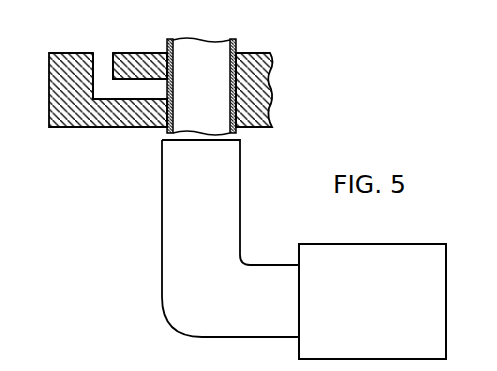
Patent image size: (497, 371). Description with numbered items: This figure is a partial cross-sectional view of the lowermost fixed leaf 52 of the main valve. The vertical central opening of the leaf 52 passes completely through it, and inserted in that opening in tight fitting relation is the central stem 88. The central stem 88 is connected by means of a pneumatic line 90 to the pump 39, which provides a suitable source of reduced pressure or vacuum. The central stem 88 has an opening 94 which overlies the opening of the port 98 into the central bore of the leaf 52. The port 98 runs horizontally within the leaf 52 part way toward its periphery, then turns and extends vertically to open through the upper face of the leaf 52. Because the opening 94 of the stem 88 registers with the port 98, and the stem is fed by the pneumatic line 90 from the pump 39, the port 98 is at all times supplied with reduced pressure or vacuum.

The leaf 52 is at (60, 87).
The central stem 88 is at (237, 42).
The opening 94 is at (171, 90).
The port 98 is at (102, 58).
The pneumatic line 90 is at (171, 181).
The pump 39 is at (335, 252).